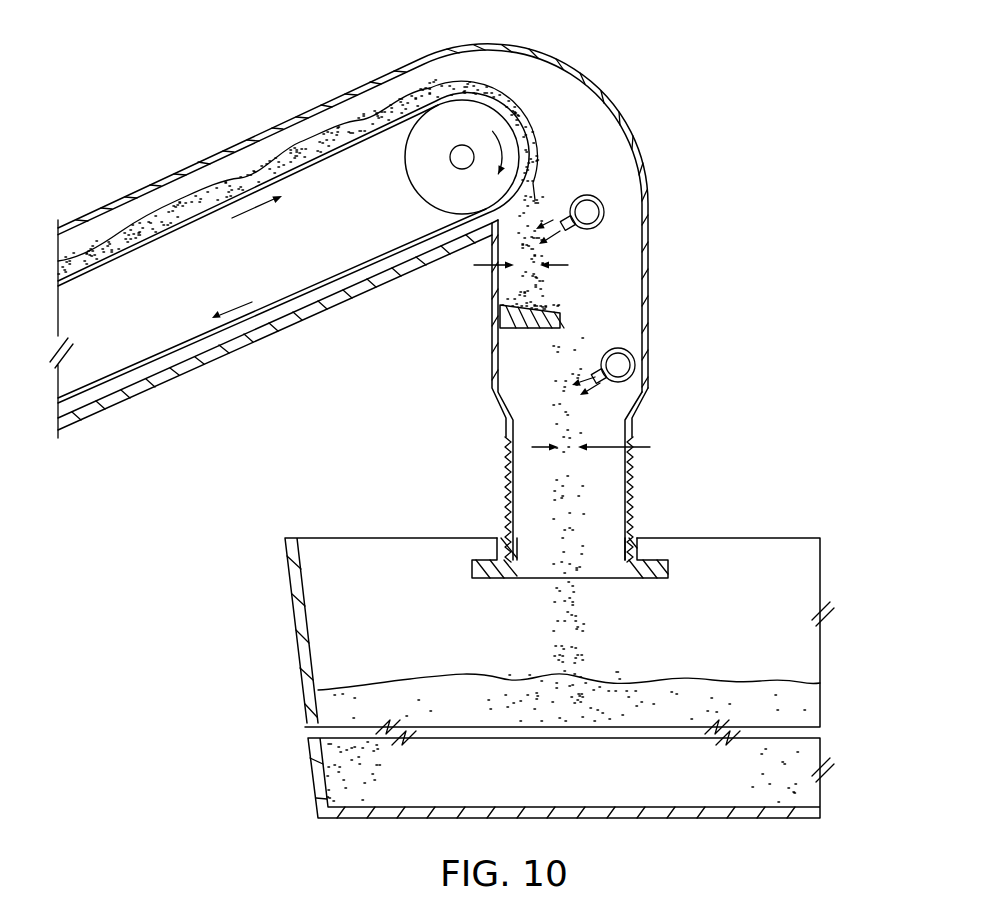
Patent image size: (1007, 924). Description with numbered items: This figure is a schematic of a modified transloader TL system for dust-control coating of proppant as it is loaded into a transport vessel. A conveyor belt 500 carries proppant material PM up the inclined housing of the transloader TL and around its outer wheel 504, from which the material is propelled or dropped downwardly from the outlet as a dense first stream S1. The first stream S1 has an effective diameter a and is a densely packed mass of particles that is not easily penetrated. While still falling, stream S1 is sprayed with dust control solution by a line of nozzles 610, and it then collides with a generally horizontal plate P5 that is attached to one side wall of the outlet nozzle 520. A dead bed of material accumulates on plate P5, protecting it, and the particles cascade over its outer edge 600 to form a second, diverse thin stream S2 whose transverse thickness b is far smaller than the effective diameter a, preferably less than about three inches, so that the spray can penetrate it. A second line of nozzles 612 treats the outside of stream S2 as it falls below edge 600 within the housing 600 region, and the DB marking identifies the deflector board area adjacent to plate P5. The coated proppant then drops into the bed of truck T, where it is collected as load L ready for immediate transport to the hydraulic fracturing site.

The transloader TL is at (305, 100).
The conveyor belt 500 is at (208, 212).
The proppant material PM is at (167, 215).
The outer wheel 504 is at (473, 128).
The first stream S1 is at (533, 206).
The line of nozzles 610 is at (600, 240).
The effective diameter a is at (508, 268).
The outlet nozzle 520 is at (490, 297).
The outer edge 600 is at (562, 321).
The deflector board DB is at (497, 320).
The plate P5 is at (503, 330).
The line of nozzles 612 is at (602, 390).
The second stream S2 is at (587, 423).
The transverse dimension b is at (602, 453).
The truck T is at (285, 573).
The load L is at (650, 695).